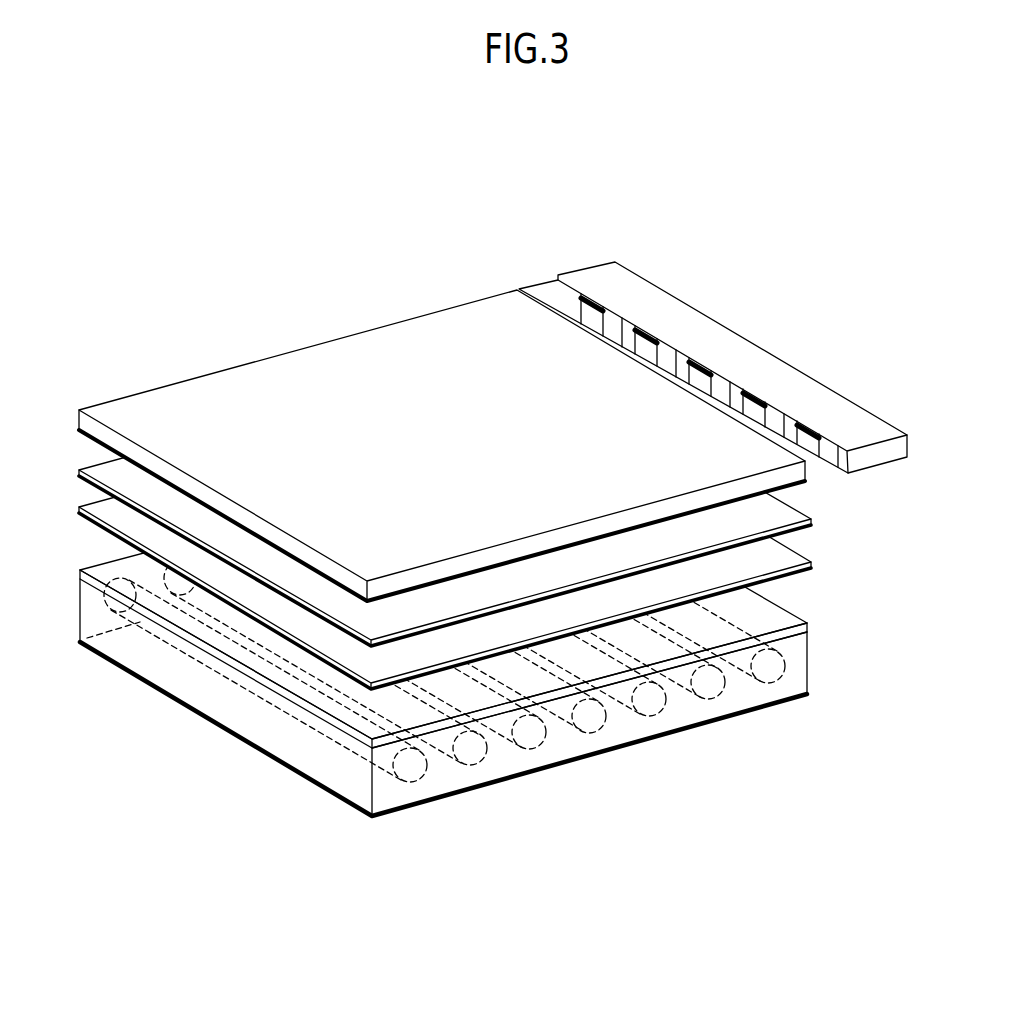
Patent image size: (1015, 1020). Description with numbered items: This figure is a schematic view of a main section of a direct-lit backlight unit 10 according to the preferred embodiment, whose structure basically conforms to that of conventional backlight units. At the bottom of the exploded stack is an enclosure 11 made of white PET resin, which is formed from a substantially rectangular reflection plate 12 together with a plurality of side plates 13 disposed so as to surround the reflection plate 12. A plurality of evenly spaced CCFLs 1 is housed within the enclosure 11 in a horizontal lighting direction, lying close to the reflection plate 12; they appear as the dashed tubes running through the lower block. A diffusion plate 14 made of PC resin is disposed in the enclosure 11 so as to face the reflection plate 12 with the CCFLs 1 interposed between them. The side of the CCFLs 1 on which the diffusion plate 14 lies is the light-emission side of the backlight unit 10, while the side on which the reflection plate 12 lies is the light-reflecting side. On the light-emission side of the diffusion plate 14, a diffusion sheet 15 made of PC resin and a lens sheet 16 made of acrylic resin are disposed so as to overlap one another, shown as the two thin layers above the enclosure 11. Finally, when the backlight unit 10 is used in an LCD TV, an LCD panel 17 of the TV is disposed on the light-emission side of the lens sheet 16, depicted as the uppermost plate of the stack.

The CCFL 1 is at (601, 729).
The direct-lit backlight unit 10 is at (908, 878).
The enclosure 11 is at (223, 728).
The reflection plate 12 is at (453, 778).
The side plate 13 is at (343, 782).
The diffusion plate 14 is at (183, 638).
The diffusion sheet 15 is at (786, 560).
The lens sheet 16 is at (786, 520).
The LCD panel 17 is at (138, 405).